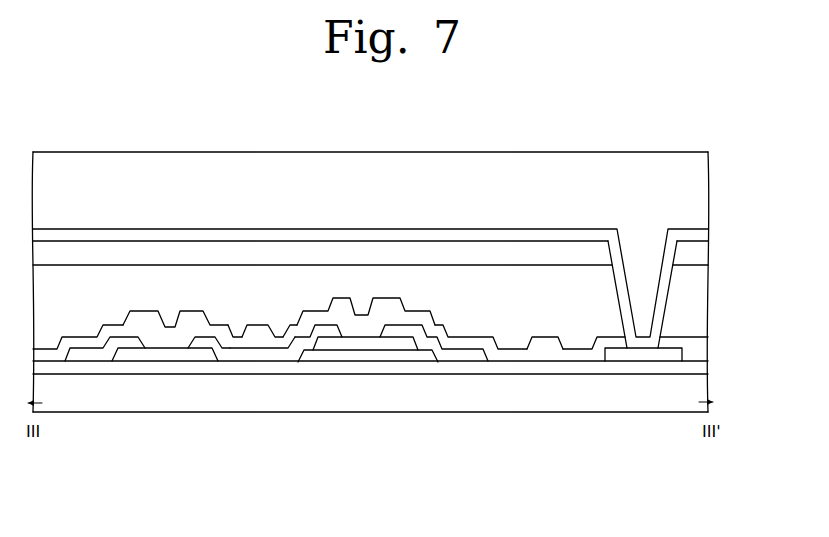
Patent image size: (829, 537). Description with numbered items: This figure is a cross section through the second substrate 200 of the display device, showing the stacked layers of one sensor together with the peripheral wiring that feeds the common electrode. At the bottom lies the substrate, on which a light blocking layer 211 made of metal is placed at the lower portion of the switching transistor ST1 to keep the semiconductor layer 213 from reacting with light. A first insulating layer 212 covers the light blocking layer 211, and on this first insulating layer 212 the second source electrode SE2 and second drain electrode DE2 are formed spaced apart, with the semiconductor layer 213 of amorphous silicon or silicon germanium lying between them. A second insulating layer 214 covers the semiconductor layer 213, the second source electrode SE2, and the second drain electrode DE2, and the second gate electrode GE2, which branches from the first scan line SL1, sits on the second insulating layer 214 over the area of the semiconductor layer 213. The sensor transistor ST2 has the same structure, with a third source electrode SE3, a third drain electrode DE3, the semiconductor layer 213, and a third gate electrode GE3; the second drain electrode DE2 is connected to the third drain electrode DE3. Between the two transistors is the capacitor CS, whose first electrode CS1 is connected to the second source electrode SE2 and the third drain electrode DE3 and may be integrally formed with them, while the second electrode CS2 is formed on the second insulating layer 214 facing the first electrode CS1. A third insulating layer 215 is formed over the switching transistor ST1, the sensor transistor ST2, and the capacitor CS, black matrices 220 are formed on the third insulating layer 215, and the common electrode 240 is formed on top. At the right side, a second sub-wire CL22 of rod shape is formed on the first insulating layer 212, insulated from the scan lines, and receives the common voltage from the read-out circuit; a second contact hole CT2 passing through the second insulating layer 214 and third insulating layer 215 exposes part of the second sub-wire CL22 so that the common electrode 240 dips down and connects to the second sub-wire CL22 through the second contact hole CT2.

The second substrate 200 is at (709, 393).
The first insulating layer 212 is at (709, 366).
The second insulating layer 214 is at (709, 345).
The third insulating layer 215 is at (709, 300).
The black matrices 220 is at (709, 251).
The common electrode 240 is at (709, 233).
The second contact hole CT2 is at (641, 252).
The second sub-wire CL22 is at (641, 357).
The first scan line SL1 is at (546, 340).
The semiconductor layer 213 is at (126, 352).
The light blocking layer 211 is at (373, 356).
The third source electrode SE3 is at (74, 356).
The third gate electrode GE3 is at (162, 333).
The third drain electrode DE3 is at (210, 405).
The switching transistor ST1 is at (146, 411).
The first electrode CS1 is at (259, 329).
The second electrode CS2 is at (247, 354).
The capacitor CS is at (279, 418).
The second source electrode SE2 is at (333, 336).
The second gate electrode GE2 is at (401, 312).
The second drain electrode DE2 is at (467, 399).
The sensor transistor ST2 is at (425, 405).